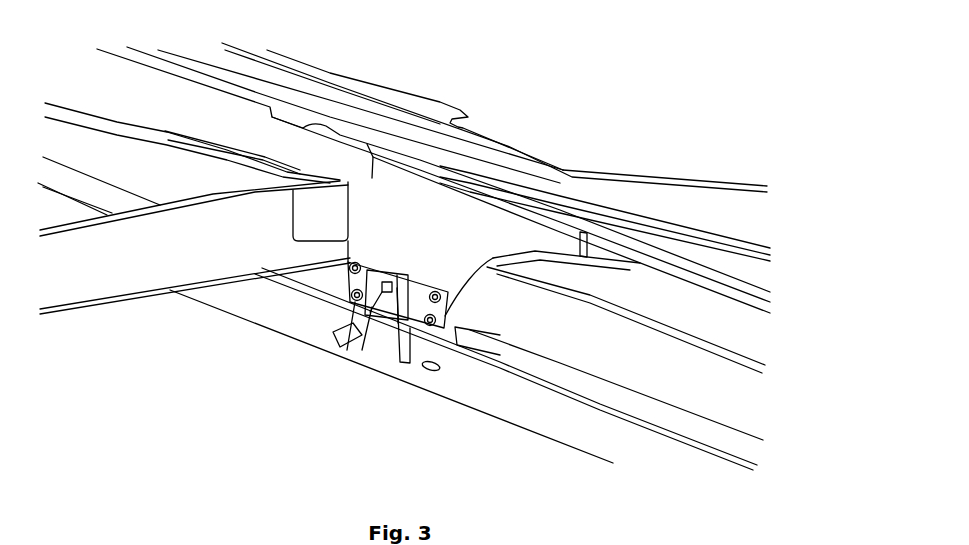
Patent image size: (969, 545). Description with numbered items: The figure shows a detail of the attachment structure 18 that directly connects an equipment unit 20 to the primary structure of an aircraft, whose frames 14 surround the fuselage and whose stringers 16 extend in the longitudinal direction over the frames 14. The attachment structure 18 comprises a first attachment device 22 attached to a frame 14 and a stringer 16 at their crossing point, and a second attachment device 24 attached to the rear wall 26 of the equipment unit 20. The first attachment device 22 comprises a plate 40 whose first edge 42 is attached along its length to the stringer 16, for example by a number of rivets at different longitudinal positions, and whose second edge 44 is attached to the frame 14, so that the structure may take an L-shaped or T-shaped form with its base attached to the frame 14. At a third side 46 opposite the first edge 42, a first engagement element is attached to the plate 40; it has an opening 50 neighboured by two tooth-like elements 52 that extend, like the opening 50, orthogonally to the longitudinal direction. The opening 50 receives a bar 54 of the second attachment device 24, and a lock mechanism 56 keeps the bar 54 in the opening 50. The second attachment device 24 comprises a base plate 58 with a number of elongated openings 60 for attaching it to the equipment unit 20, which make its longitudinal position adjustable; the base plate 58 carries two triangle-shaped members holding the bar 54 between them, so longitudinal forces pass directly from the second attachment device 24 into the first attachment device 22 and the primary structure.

The frame 14 is at (238, 241).
The stringer 16 is at (604, 209).
The attachment structure 18 is at (466, 80).
The equipment unit 20 is at (638, 434).
The first attachment device 22 is at (432, 198).
The second attachment device 24 is at (383, 363).
The rear wall 26 is at (618, 360).
The plate 40 is at (515, 196).
The first edge 42 is at (502, 228).
The second edge 44 is at (334, 203).
The third side 46 is at (473, 353).
The opening 50 is at (377, 315).
The tooth-like elements 52 is at (327, 338).
The bar 54 is at (380, 318).
The lock mechanism 56 is at (453, 350).
The base plate 58 is at (427, 392).
The elongated openings 60 is at (322, 346).